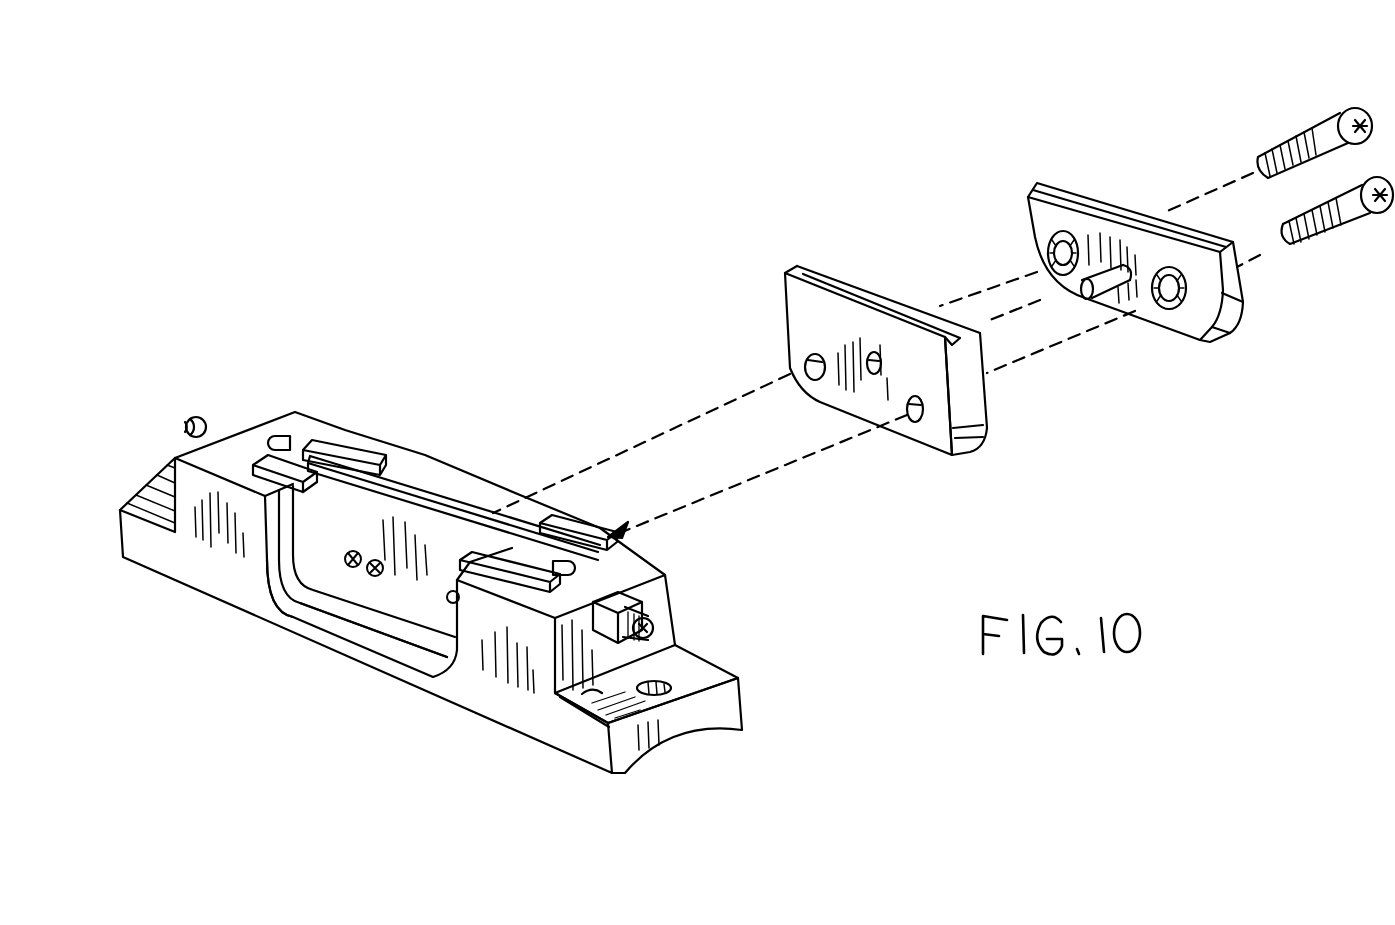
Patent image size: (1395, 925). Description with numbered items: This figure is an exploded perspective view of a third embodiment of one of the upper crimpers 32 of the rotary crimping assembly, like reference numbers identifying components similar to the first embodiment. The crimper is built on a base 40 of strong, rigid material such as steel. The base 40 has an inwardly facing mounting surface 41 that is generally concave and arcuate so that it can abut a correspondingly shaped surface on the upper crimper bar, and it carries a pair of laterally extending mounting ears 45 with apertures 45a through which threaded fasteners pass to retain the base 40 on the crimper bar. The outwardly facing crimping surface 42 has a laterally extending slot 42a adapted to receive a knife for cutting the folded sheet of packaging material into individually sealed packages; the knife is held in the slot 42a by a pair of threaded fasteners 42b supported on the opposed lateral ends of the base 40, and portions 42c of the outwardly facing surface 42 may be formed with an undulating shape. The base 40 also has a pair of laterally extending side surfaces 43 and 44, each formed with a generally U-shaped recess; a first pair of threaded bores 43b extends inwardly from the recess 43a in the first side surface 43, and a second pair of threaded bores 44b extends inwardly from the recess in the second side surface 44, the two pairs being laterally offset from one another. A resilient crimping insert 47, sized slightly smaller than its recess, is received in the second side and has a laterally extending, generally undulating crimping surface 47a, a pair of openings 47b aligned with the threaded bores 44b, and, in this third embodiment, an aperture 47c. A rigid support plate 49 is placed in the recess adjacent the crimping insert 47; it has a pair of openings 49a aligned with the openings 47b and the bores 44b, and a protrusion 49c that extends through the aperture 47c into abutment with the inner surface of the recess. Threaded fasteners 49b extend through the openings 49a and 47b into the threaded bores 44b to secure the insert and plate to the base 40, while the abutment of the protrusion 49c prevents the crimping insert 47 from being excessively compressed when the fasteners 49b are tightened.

The upper crimper 32 is at (455, 190).
The base 40 is at (445, 350).
The inwardly facing mounting surface 41 is at (657, 747).
The outwardly facing crimping surface 42 is at (613, 533).
The slot 42a is at (392, 445).
The threaded fasteners 42b is at (193, 433).
The portions of outwardly facing surface 42c is at (247, 467).
The laterally extending side surface 43 is at (508, 702).
The recess 43a is at (350, 590).
The threaded bores 43b is at (355, 552).
The laterally extending side surface 44 is at (675, 602).
The threaded bores 44b is at (355, 580).
The mounting ears 45 is at (153, 507).
The apertures 45a is at (697, 680).
The crimping insert 47 is at (800, 316).
The crimping surface 47a is at (800, 270).
The openings 47b is at (805, 363).
The aperture 47c is at (873, 355).
The support plate 49 is at (1097, 225).
The openings 49a is at (1033, 253).
The threaded fasteners 49b is at (1325, 133).
The protrusion 49c is at (1078, 307).